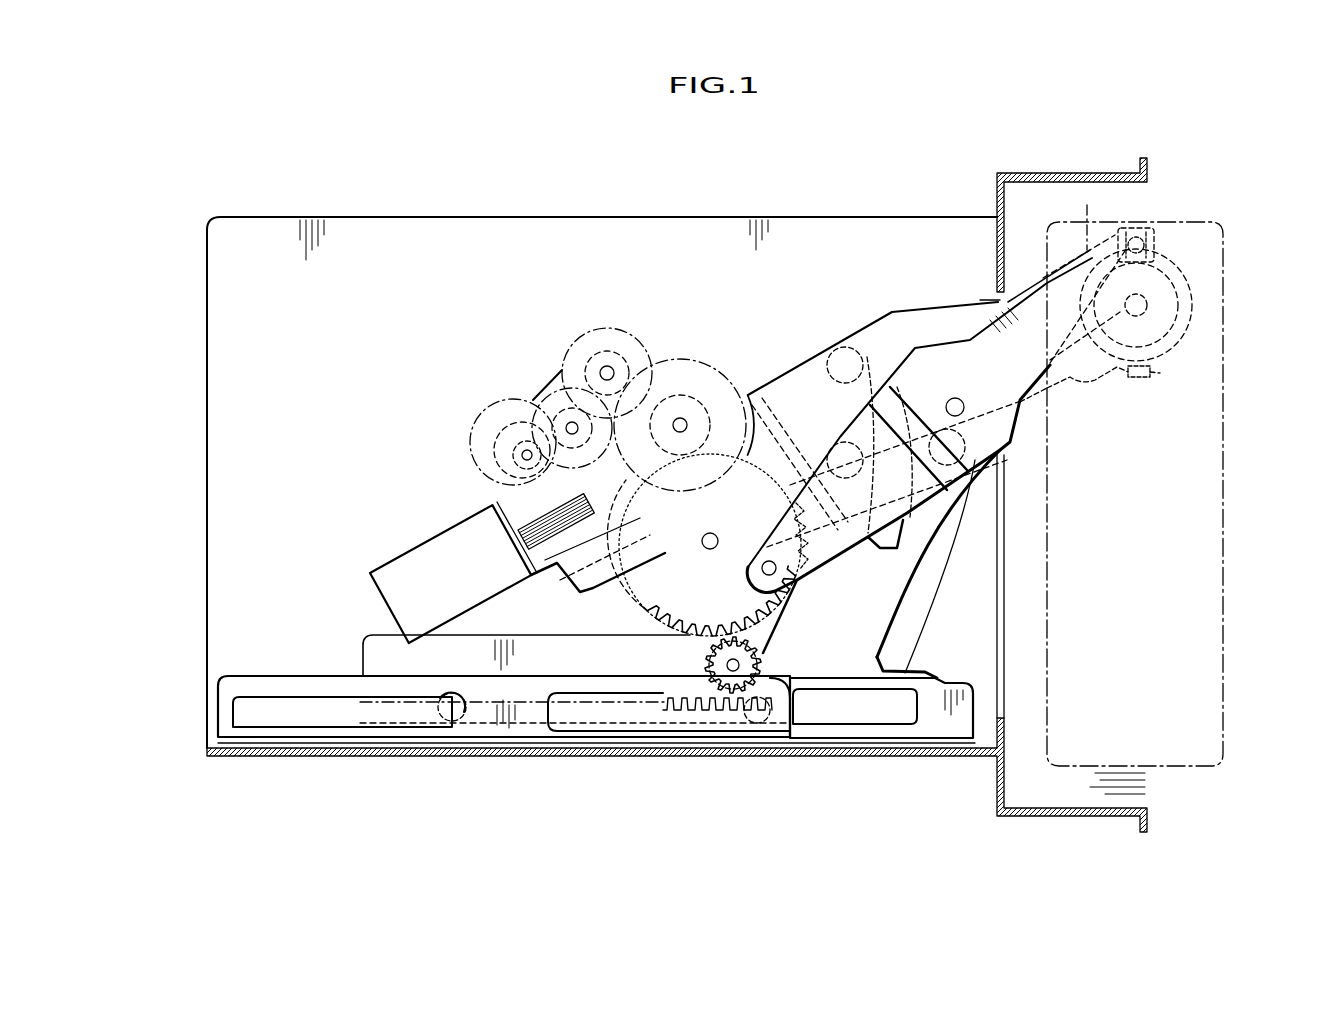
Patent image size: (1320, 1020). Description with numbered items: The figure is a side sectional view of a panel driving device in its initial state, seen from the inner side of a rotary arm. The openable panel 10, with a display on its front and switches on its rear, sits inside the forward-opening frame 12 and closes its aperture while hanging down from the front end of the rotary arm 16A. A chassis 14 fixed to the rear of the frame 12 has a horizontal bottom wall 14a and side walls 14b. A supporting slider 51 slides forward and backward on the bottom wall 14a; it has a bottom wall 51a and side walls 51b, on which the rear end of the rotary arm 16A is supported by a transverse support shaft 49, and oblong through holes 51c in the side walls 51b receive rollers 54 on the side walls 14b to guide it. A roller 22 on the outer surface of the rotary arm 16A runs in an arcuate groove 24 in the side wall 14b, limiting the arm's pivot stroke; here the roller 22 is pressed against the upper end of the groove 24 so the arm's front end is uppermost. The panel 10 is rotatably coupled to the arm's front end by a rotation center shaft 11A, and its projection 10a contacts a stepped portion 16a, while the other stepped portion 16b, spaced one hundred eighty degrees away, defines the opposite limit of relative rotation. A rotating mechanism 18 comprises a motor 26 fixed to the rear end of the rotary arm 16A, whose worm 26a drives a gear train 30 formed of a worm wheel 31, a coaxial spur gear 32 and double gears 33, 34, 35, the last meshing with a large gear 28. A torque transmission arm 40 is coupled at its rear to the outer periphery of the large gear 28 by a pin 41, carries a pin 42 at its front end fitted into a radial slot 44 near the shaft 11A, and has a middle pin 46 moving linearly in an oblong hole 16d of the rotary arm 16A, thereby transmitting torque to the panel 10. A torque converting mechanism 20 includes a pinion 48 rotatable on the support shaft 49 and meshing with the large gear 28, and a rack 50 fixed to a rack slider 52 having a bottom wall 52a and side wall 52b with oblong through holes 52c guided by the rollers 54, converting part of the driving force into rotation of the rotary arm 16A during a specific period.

The openable panel 10 is at (1224, 452).
The projection 10a is at (1160, 375).
The rotation center shaft 11A is at (1148, 304).
The frame 12 is at (1073, 172).
The chassis 14 is at (362, 212).
The bottom wall 14a is at (675, 758).
The side wall 14b is at (625, 228).
The rotary arm 16A is at (878, 348).
The stepped portion 16a is at (1128, 376).
The stepped portion 16b is at (1085, 219).
The oblong hole 16d is at (828, 455).
The rotating mechanism 18 is at (638, 322).
The torque converting mechanism 20 is at (305, 660).
The roller 22 is at (807, 362).
The arcuate groove 24 is at (895, 550).
The motor 26 is at (420, 548).
The worm 26a is at (560, 528).
The large gear 28 is at (660, 585).
The gear train 30 is at (535, 348).
The worm wheel 31 is at (490, 415).
The spur gear 32 is at (490, 458).
The double gear 33 is at (540, 384).
The double gear 34 is at (580, 330).
The double gear 35 is at (690, 356).
The torque transmission arm 40 is at (942, 362).
The pin 41 is at (776, 574).
The pin 42 is at (1156, 240).
The slot 44 is at (1127, 236).
The pin 46 is at (955, 400).
The pinion 48 is at (772, 668).
The support shaft 49 is at (732, 694).
The rack 50 is at (662, 722).
The supporting slider 51 is at (887, 758).
The bottom wall 51a is at (850, 745).
The side wall 51b is at (945, 714).
The through hole 51c is at (805, 707).
The rack slider 52 is at (330, 674).
The bottom wall 52a is at (322, 745).
The side wall 52b is at (263, 674).
The through hole 52c is at (250, 714).
The roller 54 is at (450, 700).